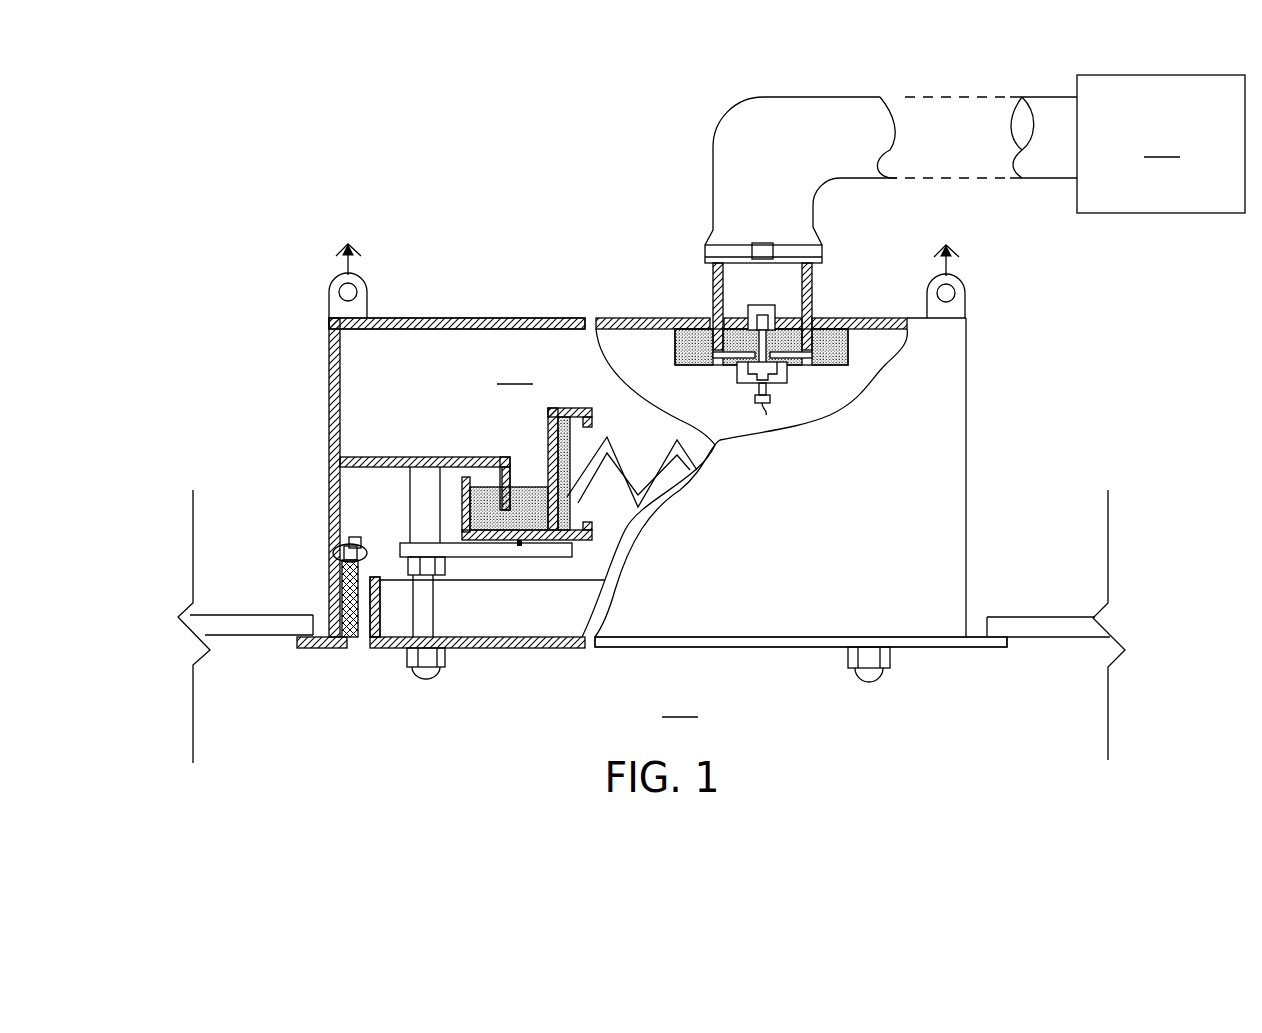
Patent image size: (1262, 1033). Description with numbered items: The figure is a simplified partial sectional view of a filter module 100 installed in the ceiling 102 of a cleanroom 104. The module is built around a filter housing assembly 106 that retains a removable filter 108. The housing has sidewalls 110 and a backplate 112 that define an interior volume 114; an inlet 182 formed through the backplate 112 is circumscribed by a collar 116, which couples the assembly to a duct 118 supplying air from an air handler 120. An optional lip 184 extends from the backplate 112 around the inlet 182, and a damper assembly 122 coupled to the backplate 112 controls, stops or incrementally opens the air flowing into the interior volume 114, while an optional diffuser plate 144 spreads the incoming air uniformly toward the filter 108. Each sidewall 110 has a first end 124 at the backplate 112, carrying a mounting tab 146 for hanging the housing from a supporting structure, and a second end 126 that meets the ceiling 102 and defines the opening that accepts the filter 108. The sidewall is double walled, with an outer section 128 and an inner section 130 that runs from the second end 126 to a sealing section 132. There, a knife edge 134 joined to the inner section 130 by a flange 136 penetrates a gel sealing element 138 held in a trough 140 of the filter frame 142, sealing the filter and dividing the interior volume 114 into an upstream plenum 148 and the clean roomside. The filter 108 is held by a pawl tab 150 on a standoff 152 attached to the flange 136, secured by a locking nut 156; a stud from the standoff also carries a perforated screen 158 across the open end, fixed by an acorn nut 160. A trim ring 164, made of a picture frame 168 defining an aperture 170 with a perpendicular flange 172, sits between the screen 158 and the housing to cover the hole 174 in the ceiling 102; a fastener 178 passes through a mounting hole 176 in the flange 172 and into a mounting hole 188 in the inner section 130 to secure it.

The filter module 100 is at (331, 210).
The ceiling 102 is at (232, 630).
The cleanroom 104 is at (801, 677).
The filter housing assembly 106 is at (968, 385).
The removable filter 108 is at (538, 456).
The sidewall 110 is at (329, 356).
The backplate 112 is at (434, 355).
The interior volume 114 is at (515, 372).
The collar 116 is at (813, 300).
The duct 118 is at (728, 162).
The air handler 120 is at (1161, 144).
The damper assembly 122 is at (777, 286).
The first end 124 is at (329, 320).
The second end 126 is at (345, 648).
The outer section 128 is at (326, 615).
The inner section 130 is at (329, 433).
The sealing section 132 is at (385, 443).
The knife edge 134 is at (522, 477).
The flange 136 is at (448, 457).
The sealing element 138 is at (477, 544).
The trough 140 is at (520, 546).
The frame 142 is at (560, 557).
The diffuser plate 144 is at (677, 348).
The mounting tab 146 is at (358, 292).
The plenum 148 is at (436, 318).
The pawl tab 150 is at (380, 590).
The standoff 152 is at (427, 478).
The locking nut 156 is at (455, 704).
The screen 158 is at (583, 648).
The acorn nut 160 is at (433, 676).
The trim ring 164 is at (322, 648).
The picture frame 168 is at (353, 648).
The aperture 170 is at (364, 652).
The flange 172 is at (440, 540).
The hole 174 is at (326, 603).
The mounting hole 176 is at (353, 537).
The fastener 178 is at (358, 568).
The inlet 182 is at (790, 318).
The lip 184 is at (858, 326).
The mounting hole 188 is at (334, 555).